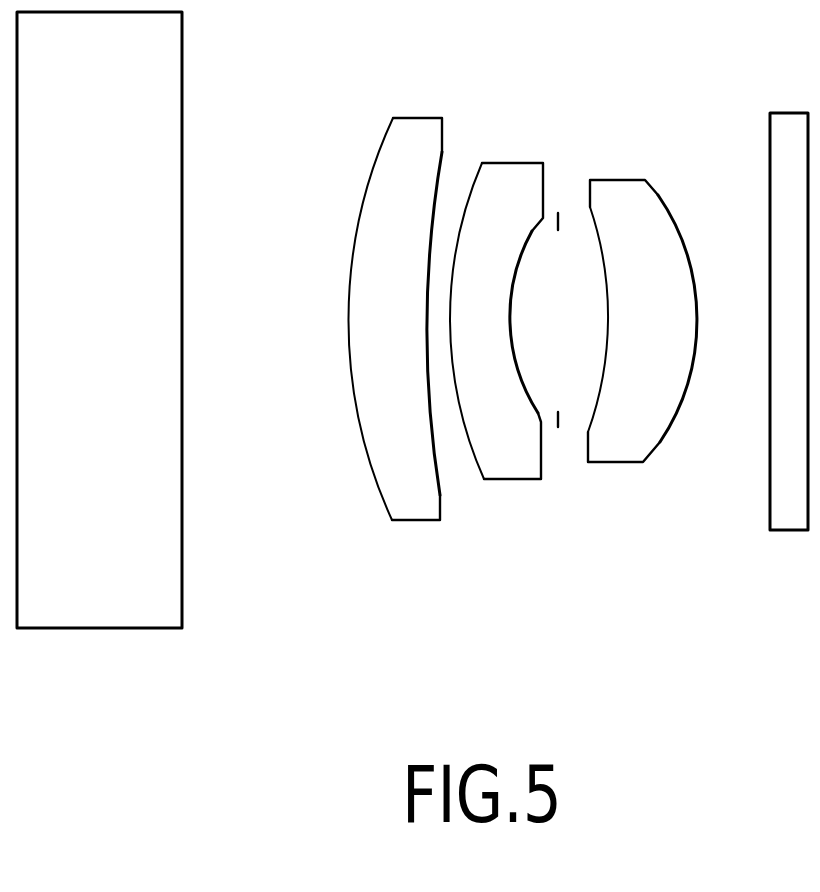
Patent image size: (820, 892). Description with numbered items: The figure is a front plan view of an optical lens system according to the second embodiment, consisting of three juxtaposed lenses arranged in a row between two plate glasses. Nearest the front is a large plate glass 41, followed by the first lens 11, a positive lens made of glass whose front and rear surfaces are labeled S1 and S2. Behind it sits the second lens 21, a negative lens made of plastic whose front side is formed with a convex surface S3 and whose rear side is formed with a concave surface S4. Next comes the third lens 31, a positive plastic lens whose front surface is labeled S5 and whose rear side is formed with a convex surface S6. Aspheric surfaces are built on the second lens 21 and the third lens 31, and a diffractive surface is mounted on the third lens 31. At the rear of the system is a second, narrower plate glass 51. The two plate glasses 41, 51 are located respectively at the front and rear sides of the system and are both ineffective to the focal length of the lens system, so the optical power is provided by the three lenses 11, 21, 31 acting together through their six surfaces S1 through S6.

The first lens 11 is at (384, 290).
The second lens 21 is at (504, 311).
The third lens 31 is at (649, 315).
The plate glass 41 is at (166, 515).
The plate glass 51 is at (780, 472).
The front surface of first lens S1 is at (380, 150).
The rear surface of first lens S2 is at (438, 152).
The convex surface S3 is at (478, 178).
The concave surface S4 is at (532, 230).
The front surface of third lens S5 is at (597, 222).
The convex surface S6 is at (657, 197).